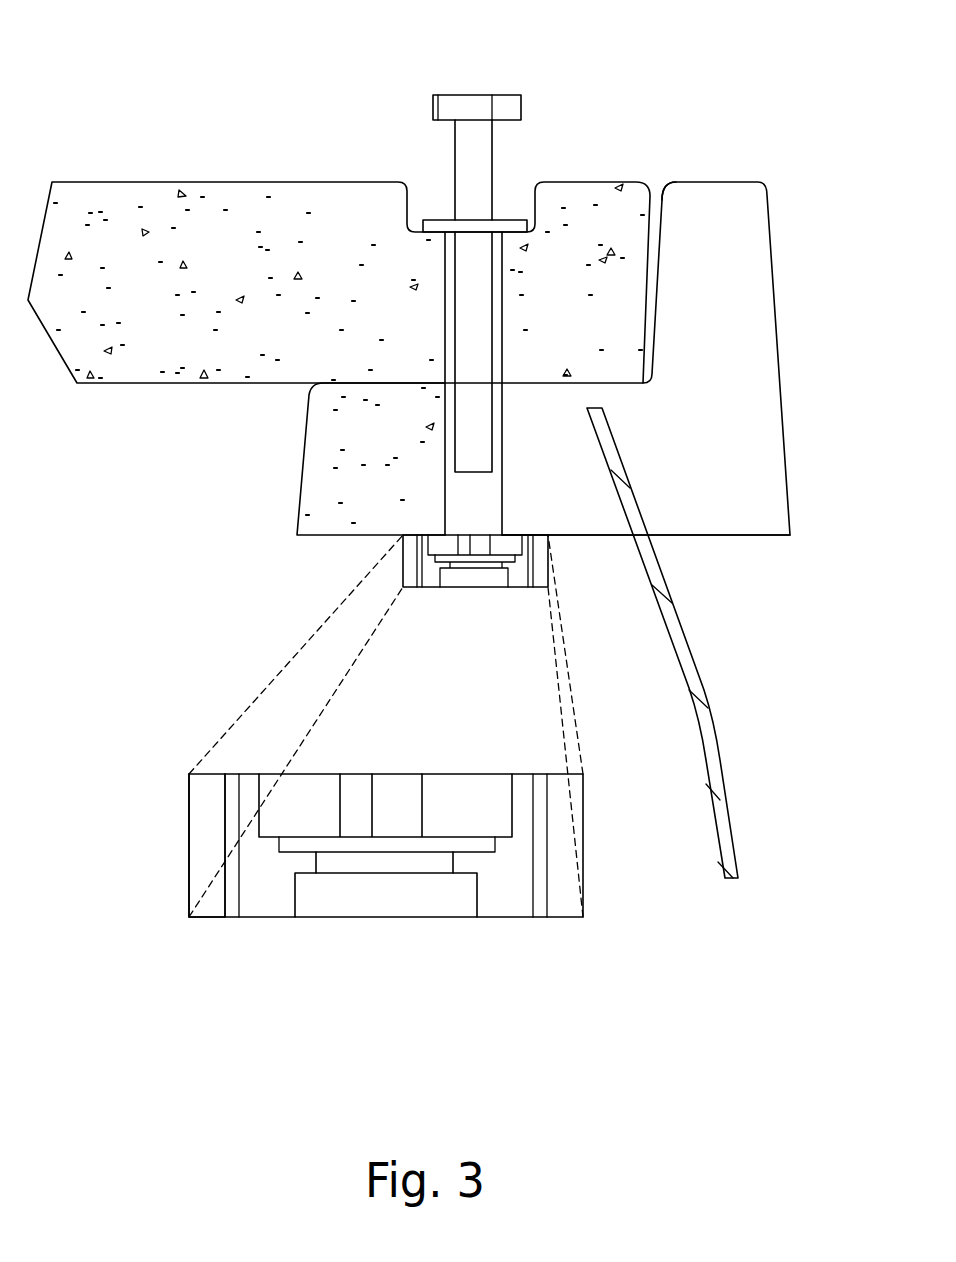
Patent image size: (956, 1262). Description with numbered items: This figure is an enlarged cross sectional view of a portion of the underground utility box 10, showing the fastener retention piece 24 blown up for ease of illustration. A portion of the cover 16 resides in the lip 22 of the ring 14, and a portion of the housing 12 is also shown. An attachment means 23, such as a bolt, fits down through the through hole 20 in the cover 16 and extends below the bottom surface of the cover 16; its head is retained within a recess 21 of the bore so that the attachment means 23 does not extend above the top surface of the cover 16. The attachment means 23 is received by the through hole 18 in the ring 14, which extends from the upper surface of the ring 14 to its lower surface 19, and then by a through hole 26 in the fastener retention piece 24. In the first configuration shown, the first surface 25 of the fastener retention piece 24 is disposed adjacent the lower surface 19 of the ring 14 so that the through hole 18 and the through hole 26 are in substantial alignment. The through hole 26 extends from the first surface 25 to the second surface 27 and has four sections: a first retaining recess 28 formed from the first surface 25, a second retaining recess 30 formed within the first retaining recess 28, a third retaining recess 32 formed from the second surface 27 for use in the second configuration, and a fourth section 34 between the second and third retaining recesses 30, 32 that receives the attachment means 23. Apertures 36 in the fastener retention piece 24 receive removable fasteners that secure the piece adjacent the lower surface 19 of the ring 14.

The box 10 is at (192, 60).
The housing 12 is at (687, 664).
The ring 14 is at (748, 342).
The cover 16 is at (153, 203).
The through hole 18 is at (465, 497).
The lower surface 19 is at (725, 535).
The through hole 20 is at (523, 165).
The recess 21 is at (433, 198).
The lip 22 is at (660, 213).
The attachment means 23 is at (470, 108).
The fastener retention piece 24 is at (410, 545).
The first surface 25 is at (210, 773).
The through hole 26 is at (388, 945).
The second surface 27 is at (200, 917).
The first retaining recess 28 is at (287, 812).
The second retaining recess 30 is at (280, 845).
The third retaining recess 32 is at (320, 893).
The fourth section 34 is at (437, 863).
The apertures 36 is at (232, 905).